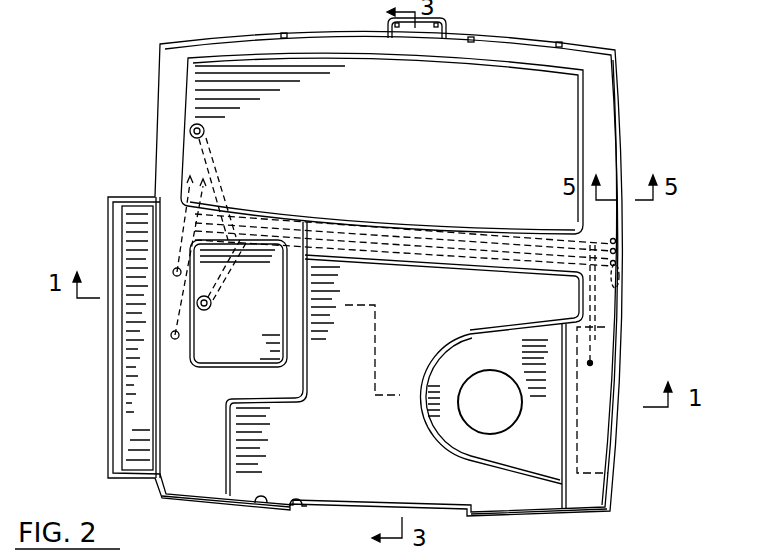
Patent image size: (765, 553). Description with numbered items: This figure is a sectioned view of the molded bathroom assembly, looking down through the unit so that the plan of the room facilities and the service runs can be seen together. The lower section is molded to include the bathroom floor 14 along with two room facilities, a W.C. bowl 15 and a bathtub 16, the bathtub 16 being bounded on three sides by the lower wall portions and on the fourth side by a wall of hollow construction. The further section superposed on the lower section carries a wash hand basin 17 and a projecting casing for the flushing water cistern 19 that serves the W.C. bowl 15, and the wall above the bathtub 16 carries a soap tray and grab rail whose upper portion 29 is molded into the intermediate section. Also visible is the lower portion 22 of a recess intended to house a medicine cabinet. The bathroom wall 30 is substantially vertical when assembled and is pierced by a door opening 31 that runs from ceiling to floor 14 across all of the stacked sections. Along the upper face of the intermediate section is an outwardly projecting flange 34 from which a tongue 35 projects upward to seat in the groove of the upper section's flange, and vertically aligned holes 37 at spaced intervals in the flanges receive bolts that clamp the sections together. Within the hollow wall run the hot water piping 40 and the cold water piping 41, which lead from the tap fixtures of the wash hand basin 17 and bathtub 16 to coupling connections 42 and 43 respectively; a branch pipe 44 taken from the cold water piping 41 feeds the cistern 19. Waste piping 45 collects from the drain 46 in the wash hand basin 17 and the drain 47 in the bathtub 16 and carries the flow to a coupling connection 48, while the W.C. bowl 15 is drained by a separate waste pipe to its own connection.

The bathroom floor 14 is at (317, 359).
The W.C. bowl 15 is at (450, 448).
The bathtub 16 is at (382, 143).
The wash hand basin 17 is at (238, 303).
The flushing water cistern 19 is at (612, 462).
The lower portion of a recess 22 is at (118, 390).
The upper portion of soap tray and grab rail 29 is at (433, 30).
The bathroom wall 30 is at (258, 498).
The door opening 31 is at (297, 500).
The outwardly projecting flange 34 is at (623, 93).
The tongue 35 is at (622, 77).
The vertically aligned holes 37 is at (625, 172).
The hot water piping 40 is at (418, 238).
The cold water piping 41 is at (465, 246).
The coupling connection 42 is at (616, 239).
The coupling connection 43 is at (618, 258).
The branch pipe 44 is at (585, 295).
The waste piping 45 is at (455, 258).
The drain 46 is at (212, 303).
The drain 47 is at (205, 131).
The coupling connection 48 is at (613, 290).